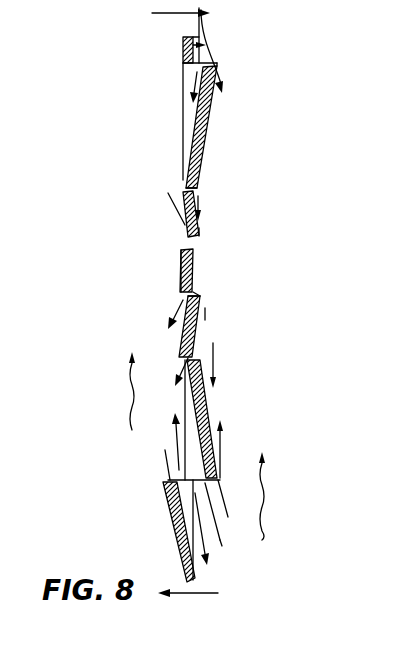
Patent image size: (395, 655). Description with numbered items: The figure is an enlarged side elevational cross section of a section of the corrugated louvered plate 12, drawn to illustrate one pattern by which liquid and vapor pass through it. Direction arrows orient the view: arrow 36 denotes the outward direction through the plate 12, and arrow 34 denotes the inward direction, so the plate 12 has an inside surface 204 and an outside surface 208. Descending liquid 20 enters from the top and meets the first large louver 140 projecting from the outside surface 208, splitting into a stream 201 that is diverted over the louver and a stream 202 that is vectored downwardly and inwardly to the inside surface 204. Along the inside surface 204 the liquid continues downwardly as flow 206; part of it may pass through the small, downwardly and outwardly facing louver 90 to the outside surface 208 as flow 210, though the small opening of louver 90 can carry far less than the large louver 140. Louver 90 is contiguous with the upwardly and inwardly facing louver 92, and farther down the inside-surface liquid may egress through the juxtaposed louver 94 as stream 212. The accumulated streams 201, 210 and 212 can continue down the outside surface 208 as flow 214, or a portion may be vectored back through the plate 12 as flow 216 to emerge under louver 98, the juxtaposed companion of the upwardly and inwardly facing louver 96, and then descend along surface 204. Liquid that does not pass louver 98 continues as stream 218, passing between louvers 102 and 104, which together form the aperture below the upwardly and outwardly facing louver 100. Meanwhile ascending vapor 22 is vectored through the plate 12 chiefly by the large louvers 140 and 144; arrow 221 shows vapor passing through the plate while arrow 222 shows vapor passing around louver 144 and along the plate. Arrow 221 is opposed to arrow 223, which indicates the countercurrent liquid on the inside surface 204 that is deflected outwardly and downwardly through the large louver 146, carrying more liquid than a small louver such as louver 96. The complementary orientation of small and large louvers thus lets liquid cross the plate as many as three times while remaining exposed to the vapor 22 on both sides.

The plate 12 is at (187, 37).
The outward direction arrow 36 is at (194, 12).
The descending liquid 20 is at (204, 27).
The inside plate surface 204 is at (183, 53).
The outside plate surface 208 is at (206, 45).
The liquid stream 202 is at (198, 78).
The liquid stream 201 is at (222, 71).
The large louver 140 is at (210, 117).
The flow arrow 206 is at (181, 177).
The small louver 90 is at (199, 176).
The small louver 92 is at (171, 199).
The flow arrow 210 is at (200, 200).
The small louver 94 is at (200, 230).
The small louver 96 is at (178, 256).
The liquid stream 212 is at (200, 247).
The small louver 98 is at (178, 292).
The flow arrow 216 is at (200, 258).
The small louver 100 is at (201, 299).
The liquid stream 218 is at (206, 314).
The small louver 102 is at (180, 353).
The flow arrow 214 is at (214, 345).
The ascending vapor flow 22 is at (130, 390).
The small louver 104 is at (200, 378).
The large louver 144 is at (208, 422).
The vapor arrow 222 is at (224, 446).
The liquid flow arrow 223 is at (166, 462).
The large louver 146 is at (175, 523).
The vapor arrow 221 is at (222, 530).
The inward direction arrow 34 is at (199, 594).